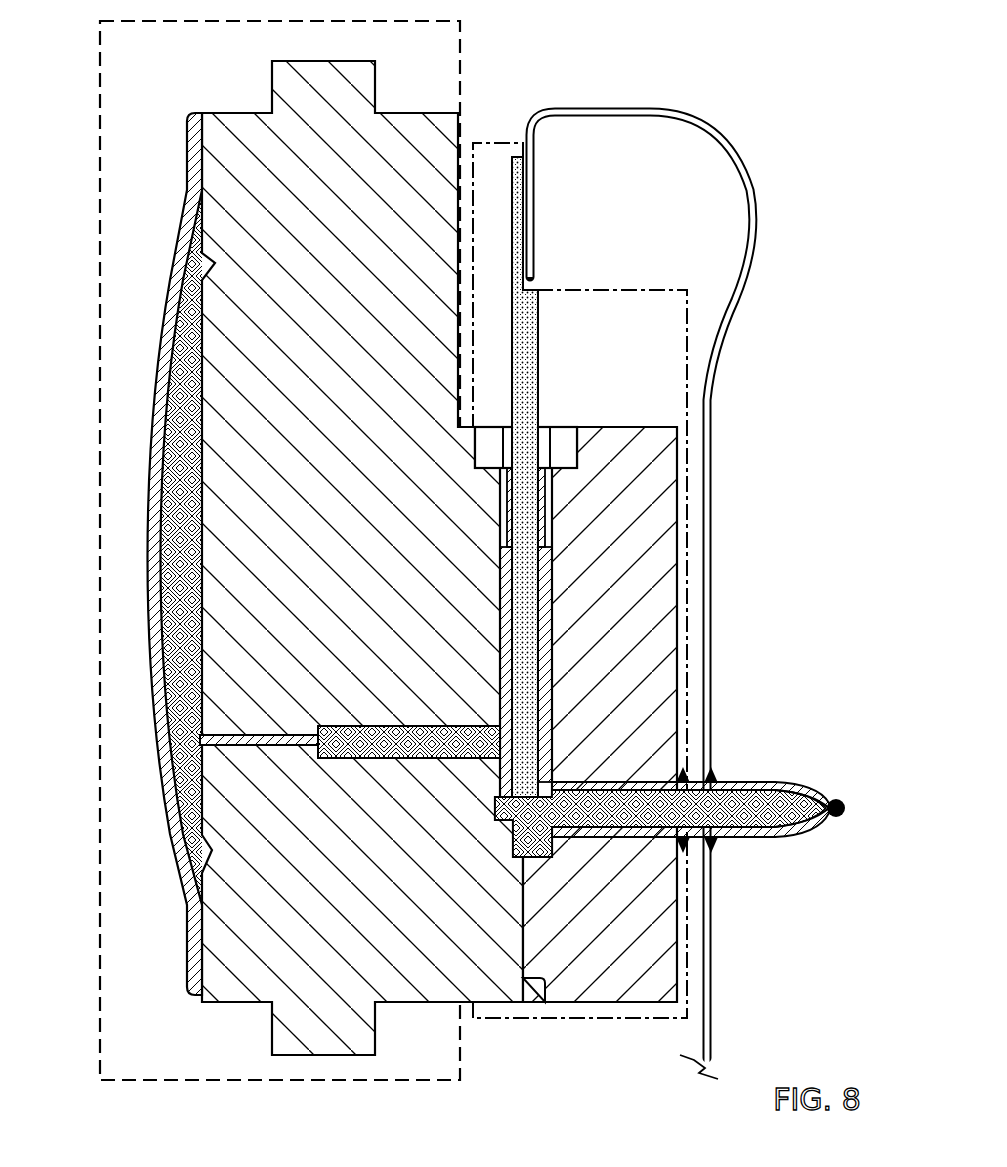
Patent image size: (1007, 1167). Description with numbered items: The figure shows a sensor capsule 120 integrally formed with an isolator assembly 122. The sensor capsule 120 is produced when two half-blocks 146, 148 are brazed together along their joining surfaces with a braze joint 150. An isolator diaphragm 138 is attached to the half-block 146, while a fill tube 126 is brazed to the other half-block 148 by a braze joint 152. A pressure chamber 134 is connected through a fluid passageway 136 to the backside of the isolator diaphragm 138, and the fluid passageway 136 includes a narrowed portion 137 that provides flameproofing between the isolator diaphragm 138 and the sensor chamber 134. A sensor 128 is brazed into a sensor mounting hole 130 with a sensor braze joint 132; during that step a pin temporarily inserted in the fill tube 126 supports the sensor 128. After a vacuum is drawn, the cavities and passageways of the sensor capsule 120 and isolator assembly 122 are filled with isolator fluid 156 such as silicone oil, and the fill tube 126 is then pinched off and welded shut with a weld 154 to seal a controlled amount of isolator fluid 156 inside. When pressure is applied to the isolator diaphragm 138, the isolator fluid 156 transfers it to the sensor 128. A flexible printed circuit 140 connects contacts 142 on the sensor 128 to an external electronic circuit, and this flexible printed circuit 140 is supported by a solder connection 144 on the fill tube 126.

The sensor capsule 120 is at (490, 143).
The isolator assembly 122 is at (462, 32).
The fill tube 126 is at (778, 783).
The sensor 128 is at (540, 357).
The sensor mounting hole 130 is at (545, 467).
The sensor braze joint 132 is at (545, 527).
The pressure chamber 134 is at (545, 627).
The fluid passageway 136 is at (383, 758).
The narrowed portion 137 is at (273, 745).
The isolator diaphragm 138 is at (152, 390).
The flexible printed circuit 140 is at (740, 150).
The contacts 142 is at (527, 215).
The solder connection 144 is at (722, 775).
The half-block 146 is at (502, 972).
The half-block 148 is at (562, 970).
The braze joint 150 is at (547, 983).
The braze joint 152 is at (663, 858).
The weld 154 is at (845, 800).
The isolator fluid 156 is at (173, 570).